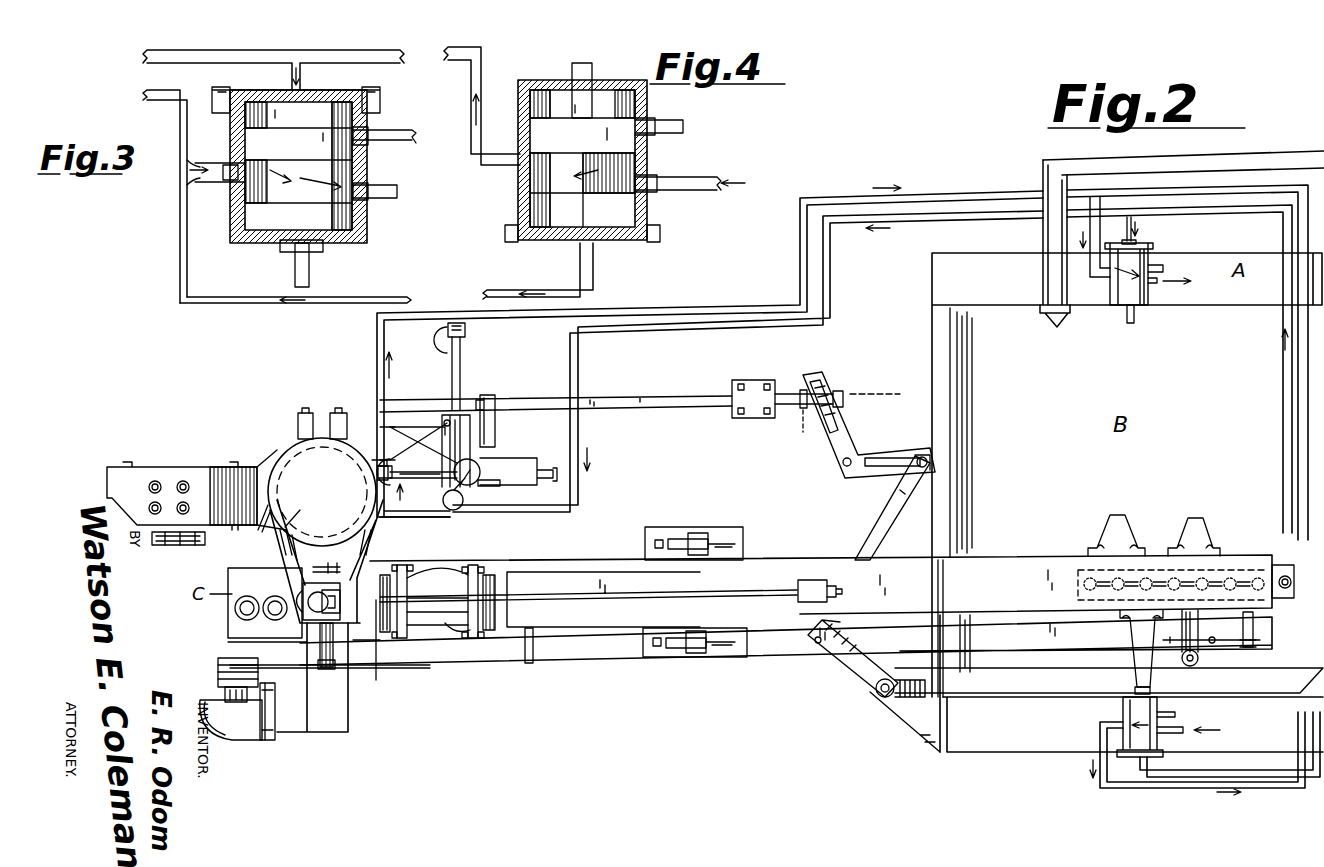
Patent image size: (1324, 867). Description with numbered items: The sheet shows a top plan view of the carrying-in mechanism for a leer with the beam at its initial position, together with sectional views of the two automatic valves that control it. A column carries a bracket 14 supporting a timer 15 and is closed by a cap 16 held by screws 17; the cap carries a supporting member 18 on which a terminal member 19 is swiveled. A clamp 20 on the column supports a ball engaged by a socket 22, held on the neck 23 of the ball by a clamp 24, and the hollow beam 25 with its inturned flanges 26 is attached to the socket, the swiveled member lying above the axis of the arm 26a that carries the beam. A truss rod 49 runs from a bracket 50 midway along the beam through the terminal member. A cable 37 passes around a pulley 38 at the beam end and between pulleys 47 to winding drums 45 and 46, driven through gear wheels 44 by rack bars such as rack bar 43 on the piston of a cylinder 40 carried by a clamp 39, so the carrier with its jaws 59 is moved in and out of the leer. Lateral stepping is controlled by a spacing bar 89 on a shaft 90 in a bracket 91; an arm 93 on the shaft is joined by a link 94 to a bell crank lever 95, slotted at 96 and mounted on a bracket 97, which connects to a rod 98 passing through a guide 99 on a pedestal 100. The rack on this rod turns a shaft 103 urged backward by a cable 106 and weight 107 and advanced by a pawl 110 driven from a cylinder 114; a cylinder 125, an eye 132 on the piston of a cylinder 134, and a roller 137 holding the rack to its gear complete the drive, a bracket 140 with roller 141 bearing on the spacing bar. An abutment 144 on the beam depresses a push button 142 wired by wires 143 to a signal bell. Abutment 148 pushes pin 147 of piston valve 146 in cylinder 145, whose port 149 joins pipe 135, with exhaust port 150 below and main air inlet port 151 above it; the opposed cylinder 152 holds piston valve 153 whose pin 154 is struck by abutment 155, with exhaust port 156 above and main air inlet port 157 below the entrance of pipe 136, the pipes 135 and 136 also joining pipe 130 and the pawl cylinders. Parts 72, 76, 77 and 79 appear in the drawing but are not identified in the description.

In FIG. 2, the bracket 14 is at (262, 458).
In FIG. 2, the timer 15 is at (172, 467).
In FIG. 2, the cap 16 is at (300, 511).
In FIG. 2, the screws 17 is at (258, 530).
In FIG. 2, the supporting member 18 is at (306, 551).
In FIG. 2, the terminal member 19 is at (338, 580).
In FIG. 2, the clamp 20 is at (849, 418).
In FIG. 2, the socket 22 is at (452, 626).
In FIG. 2, the neck 23 is at (398, 592).
In FIG. 2, the clamp 24 is at (316, 650).
In FIG. 2, the beam 25 is at (833, 563).
In FIG. 2, the inturned flanges 26 is at (377, 541).
In FIG. 2, the arm 26a is at (377, 660).
In FIG. 2, the cable 37 is at (776, 667).
In FIG. 2, the pulley 38 is at (1256, 647).
In FIG. 2, the clamp 39 is at (350, 721).
In FIG. 2, the cylinder 40 is at (234, 737).
In FIG. 2, the rack bar 43 is at (228, 698).
In FIG. 2, the gear wheels 44 is at (276, 718).
In FIG. 2, the winding drum 45 is at (219, 658).
In FIG. 2, the winding drum 46 is at (330, 672).
In FIG. 2, the pulleys 47 is at (528, 665).
In FIG. 2, the truss rod 49 is at (685, 597).
In FIG. 2, the bracket 50 is at (798, 592).
In FIG. 2, the jaws 59 is at (1302, 573).
In FIG. 2, the plate 72 is at (165, 547).
In FIG. 2, the bolt 76 is at (152, 481).
In FIG. 2, the bolt 77 is at (189, 508).
In FIG. 2, the bolt 79 is at (186, 482).
In FIG. 2, the spacing bar 89 is at (995, 690).
In FIG. 2, the shaft 90 is at (876, 695).
In FIG. 2, the bracket 91 is at (903, 723).
In FIG. 2, the arm 93 is at (838, 681).
In FIG. 2, the link 94 is at (883, 507).
In FIG. 2, the bell crank lever 95 is at (842, 433).
In FIG. 2, the slot 96 is at (815, 373).
In FIG. 2, the bracket 97 is at (916, 455).
In FIG. 2, the rod 98 is at (683, 395).
In FIG. 2, the guide 99 is at (750, 380).
In FIG. 2, the pedestal 100 is at (714, 656).
In FIG. 2, the shaft 103 is at (462, 376).
In FIG. 2, the cable 106 is at (466, 333).
In FIG. 2, the weight 107 is at (445, 345).
In FIG. 2, the pawl 110 is at (415, 471).
In FIG. 2, the cylinder 114 is at (507, 486).
In FIG. 2, the cylinder 125 is at (480, 465).
In FIG. 2, the pipe 130 is at (452, 512).
In FIG. 2, the eye 132 is at (377, 478).
In FIG. 2, the cylinder 134 is at (415, 495).
In FIG. 3, the pipe 135 is at (355, 298).
In FIG. 4, the pipe 135 is at (594, 276).
In FIG. 2, the pipe 135 is at (987, 197).
In FIG. 3, the pipe 136 is at (212, 53).
In FIG. 4, the pipe 136 is at (483, 71).
In FIG. 2, the pipe 136 is at (580, 432).
In FIG. 2, the roller 137 is at (499, 398).
In FIG. 2, the bracket 140 is at (1200, 660).
In FIG. 2, the roller 141 is at (1182, 660).
In FIG. 2, the push button 142 is at (1057, 325).
In FIG. 2, the wires 143 is at (1222, 149).
In FIG. 2, the abutment 144 is at (1117, 515).
In FIG. 3, the cylinder 145 is at (365, 166).
In FIG. 2, the cylinder 145 is at (1115, 305).
In FIG. 3, the piston valve 146 is at (318, 130).
In FIG. 3, the pin 147 is at (295, 268).
In FIG. 2, the pin 147 is at (1136, 318).
In FIG. 2, the abutment 148 is at (1193, 518).
In FIG. 3, the port 149 is at (222, 190).
In FIG. 2, the port 149 is at (1095, 268).
In FIG. 3, the exhaust port 150 is at (400, 190).
In FIG. 2, the exhaust port 150 is at (1157, 284).
In FIG. 3, the main air inlet port 151 is at (413, 135).
In FIG. 2, the main air inlet port 151 is at (1160, 265).
In FIG. 2, the cylinder 152 is at (1135, 713).
In FIG. 4, the piston valve 153 is at (530, 185).
In FIG. 2, the pin 154 is at (1151, 690).
In FIG. 2, the abutment 155 is at (1128, 632).
In FIG. 4, the exhaust port 156 is at (684, 124).
In FIG. 2, the exhaust port 156 is at (1166, 714).
In FIG. 4, the main air inlet port 157 is at (657, 191).
In FIG. 2, the main air inlet port 157 is at (1178, 731).